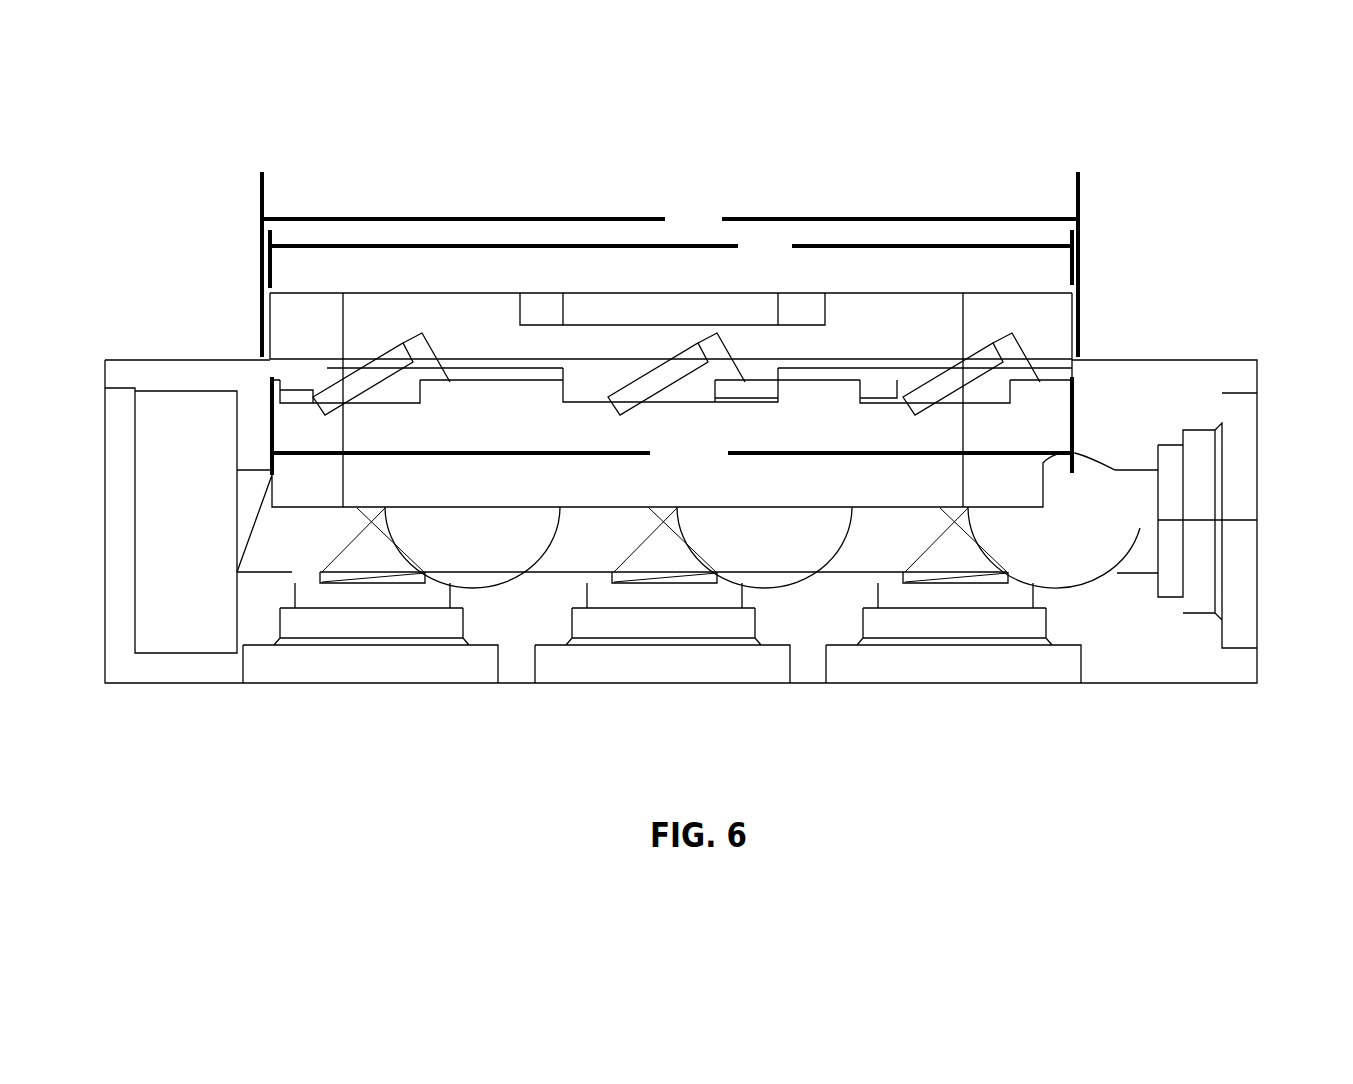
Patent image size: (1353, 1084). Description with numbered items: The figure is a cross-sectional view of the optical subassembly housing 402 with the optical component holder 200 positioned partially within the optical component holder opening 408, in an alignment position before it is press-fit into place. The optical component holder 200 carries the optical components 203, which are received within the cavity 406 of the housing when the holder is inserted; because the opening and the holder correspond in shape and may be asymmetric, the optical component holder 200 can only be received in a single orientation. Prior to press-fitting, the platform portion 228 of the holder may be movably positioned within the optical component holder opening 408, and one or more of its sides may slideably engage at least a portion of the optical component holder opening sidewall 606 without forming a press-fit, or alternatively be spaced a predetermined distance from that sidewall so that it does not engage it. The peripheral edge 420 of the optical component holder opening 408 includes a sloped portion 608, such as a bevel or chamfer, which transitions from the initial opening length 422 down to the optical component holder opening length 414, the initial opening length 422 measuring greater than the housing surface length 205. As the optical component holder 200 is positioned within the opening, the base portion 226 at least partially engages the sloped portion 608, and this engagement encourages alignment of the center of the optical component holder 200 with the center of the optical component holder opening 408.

The optical component holder 200 is at (1042, 292).
The optical components 203 is at (670, 372).
The housing surface length 205 is at (671, 259).
The base portion 226 is at (432, 328).
The platform portion 228 is at (318, 378).
The optical subassembly housing 402 is at (1257, 388).
The cavity 406 is at (290, 550).
The optical component holder opening 408 is at (548, 439).
The optical component holder opening length 414 is at (672, 426).
The peripheral edge 420 is at (251, 342).
The initial opening length 422 is at (670, 264).
The optical component holder opening sidewall 606 is at (266, 432).
The sloped portion 608 is at (1085, 360).